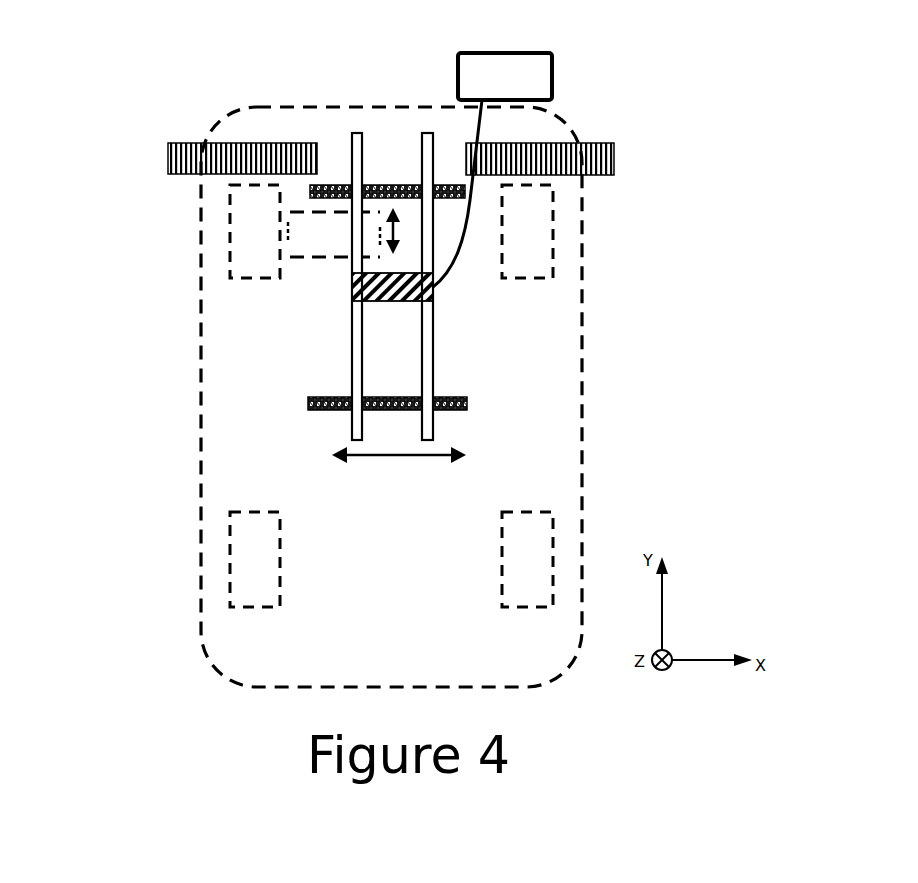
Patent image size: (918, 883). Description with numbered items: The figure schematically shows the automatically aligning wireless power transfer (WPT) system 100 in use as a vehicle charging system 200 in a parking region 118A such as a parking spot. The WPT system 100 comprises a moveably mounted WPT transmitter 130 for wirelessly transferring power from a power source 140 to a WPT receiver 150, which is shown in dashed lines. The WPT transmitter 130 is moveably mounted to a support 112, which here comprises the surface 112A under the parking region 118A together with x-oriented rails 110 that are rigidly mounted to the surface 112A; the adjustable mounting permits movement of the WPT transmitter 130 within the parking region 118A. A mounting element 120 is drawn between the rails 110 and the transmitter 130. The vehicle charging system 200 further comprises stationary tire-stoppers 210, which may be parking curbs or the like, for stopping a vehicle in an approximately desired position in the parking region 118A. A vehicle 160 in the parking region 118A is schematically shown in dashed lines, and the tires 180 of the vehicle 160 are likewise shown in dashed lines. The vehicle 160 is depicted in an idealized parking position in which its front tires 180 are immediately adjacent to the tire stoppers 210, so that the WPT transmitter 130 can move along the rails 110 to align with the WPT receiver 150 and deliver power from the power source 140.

The automatically aligning wireless power transfer (WPT) system 100 is at (280, 353).
The rails 110 is at (462, 404).
The support 112 is at (330, 185).
The surface 112A is at (345, 384).
The parking region 118A is at (372, 651).
The side rail 120 is at (433, 372).
The WPT transmitter 130 is at (352, 288).
The power source 140 is at (458, 70).
The WPT receiver 150 is at (298, 237).
The vehicle 160 is at (582, 390).
The tires 180 is at (502, 545).
The vehicle charging system 200 is at (586, 86).
The tire-stoppers 210 is at (168, 157).